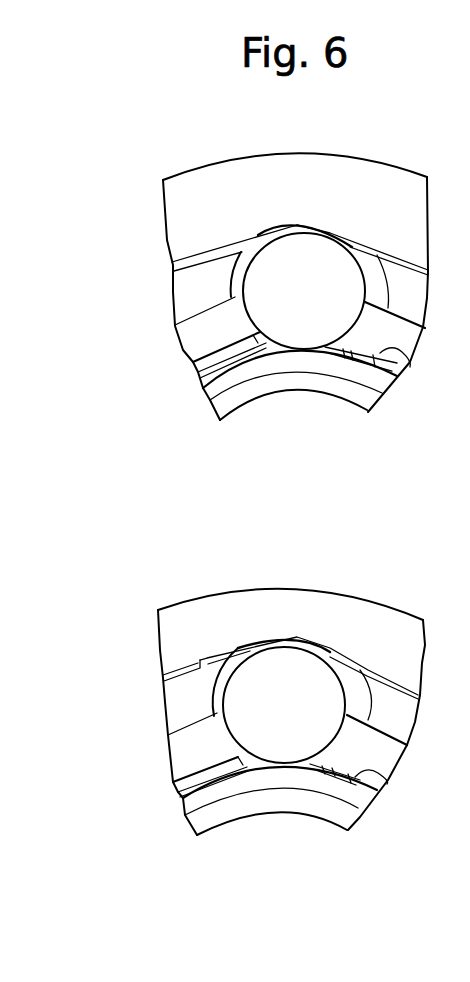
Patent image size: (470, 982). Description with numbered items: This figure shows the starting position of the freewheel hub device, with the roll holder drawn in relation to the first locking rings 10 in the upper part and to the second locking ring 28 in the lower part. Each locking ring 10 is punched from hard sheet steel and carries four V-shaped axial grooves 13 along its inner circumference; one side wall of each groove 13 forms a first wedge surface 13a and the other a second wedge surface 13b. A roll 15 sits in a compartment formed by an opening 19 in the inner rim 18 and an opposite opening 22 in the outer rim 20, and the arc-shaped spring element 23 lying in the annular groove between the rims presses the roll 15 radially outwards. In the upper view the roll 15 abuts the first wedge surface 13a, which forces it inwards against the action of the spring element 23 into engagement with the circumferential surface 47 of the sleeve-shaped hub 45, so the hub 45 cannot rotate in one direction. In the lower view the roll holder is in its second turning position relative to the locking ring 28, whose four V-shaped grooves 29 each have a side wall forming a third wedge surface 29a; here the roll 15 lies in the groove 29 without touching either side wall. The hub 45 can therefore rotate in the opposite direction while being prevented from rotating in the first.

The locking ring 10 is at (372, 193).
The axial groove 13 is at (300, 223).
The first wedge surface 13a is at (358, 243).
The second wedge surface 13b is at (260, 238).
The roll 15 is at (305, 257).
The inner rim 18 is at (202, 365).
The opening 19 is at (363, 333).
The outer rim 20 is at (187, 292).
The opening 22 is at (375, 288).
The spring element 23 is at (187, 339).
The locking ring 28 is at (367, 618).
The axial groove 29 is at (290, 624).
The third wedge surface 29a is at (340, 653).
The hub 45 is at (292, 378).
The circumferential surface 47 is at (405, 373).